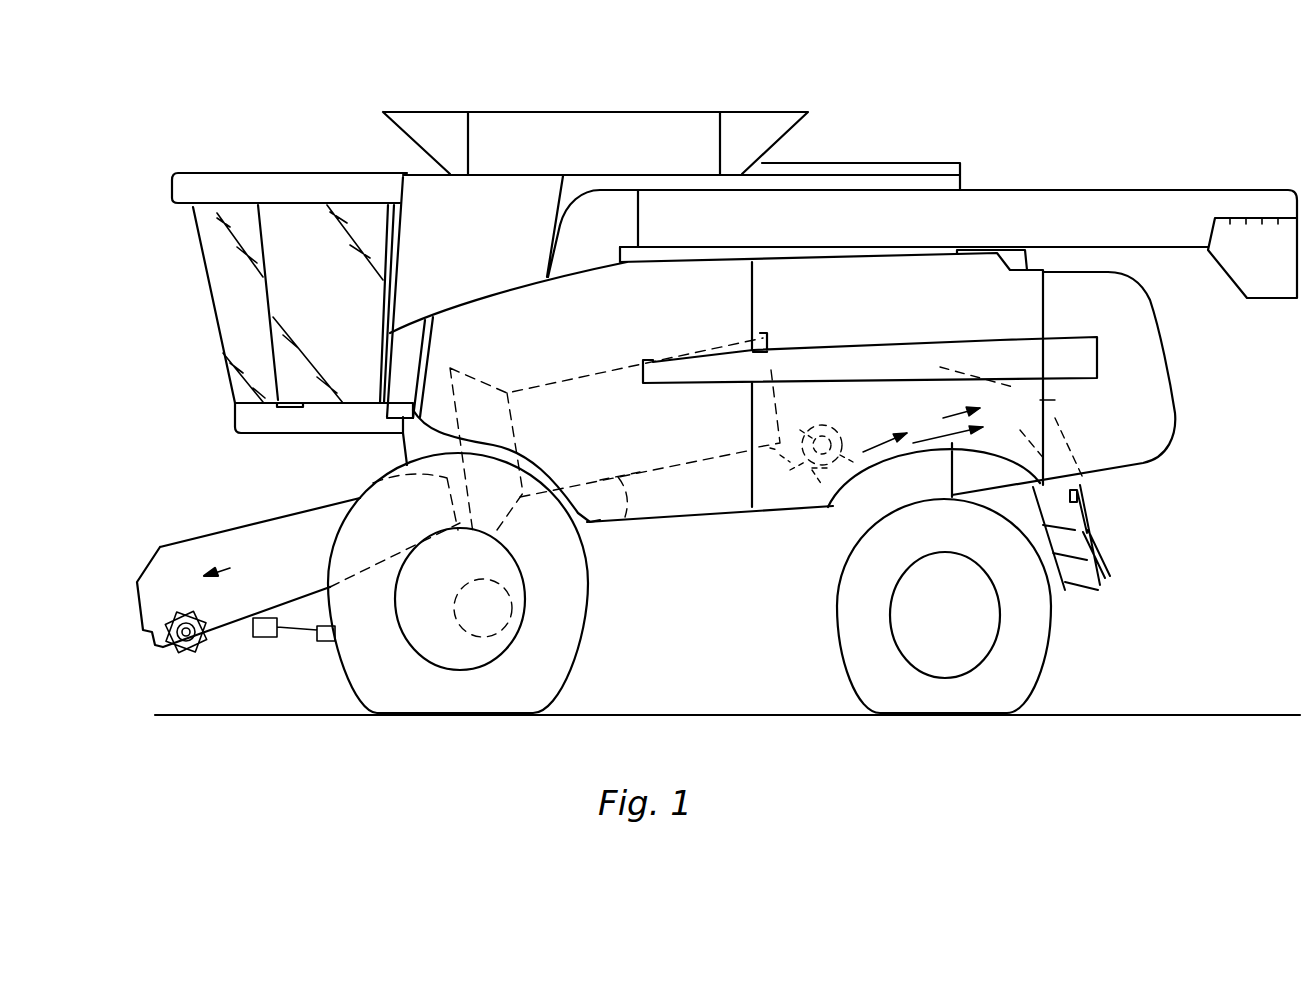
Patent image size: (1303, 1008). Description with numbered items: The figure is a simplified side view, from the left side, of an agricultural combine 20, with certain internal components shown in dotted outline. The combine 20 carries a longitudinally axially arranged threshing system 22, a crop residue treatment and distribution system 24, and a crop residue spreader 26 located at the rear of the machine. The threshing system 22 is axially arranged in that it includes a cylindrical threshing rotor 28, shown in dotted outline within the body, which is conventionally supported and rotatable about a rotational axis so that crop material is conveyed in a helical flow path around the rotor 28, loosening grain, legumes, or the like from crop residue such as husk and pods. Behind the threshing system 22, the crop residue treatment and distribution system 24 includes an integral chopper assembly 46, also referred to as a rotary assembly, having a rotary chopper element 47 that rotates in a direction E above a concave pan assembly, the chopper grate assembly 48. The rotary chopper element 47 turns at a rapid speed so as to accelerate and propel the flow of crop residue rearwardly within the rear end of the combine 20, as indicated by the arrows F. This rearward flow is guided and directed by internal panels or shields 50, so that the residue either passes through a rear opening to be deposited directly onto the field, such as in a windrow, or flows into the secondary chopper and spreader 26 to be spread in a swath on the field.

The agricultural combine 20 is at (1135, 162).
The threshing system 22 is at (562, 380).
The crop residue treatment and distribution system 24 is at (850, 398).
The crop residue spreader 26 is at (1083, 593).
The threshing rotor 28 is at (625, 480).
The integral chopper assembly 46 is at (807, 407).
The rotary chopper element 47 is at (837, 425).
The chopper grate assembly 48 is at (792, 477).
The shields 50 is at (1050, 402).
The direction of rotation E is at (818, 470).
The crop residue flow arrows F is at (1050, 447).